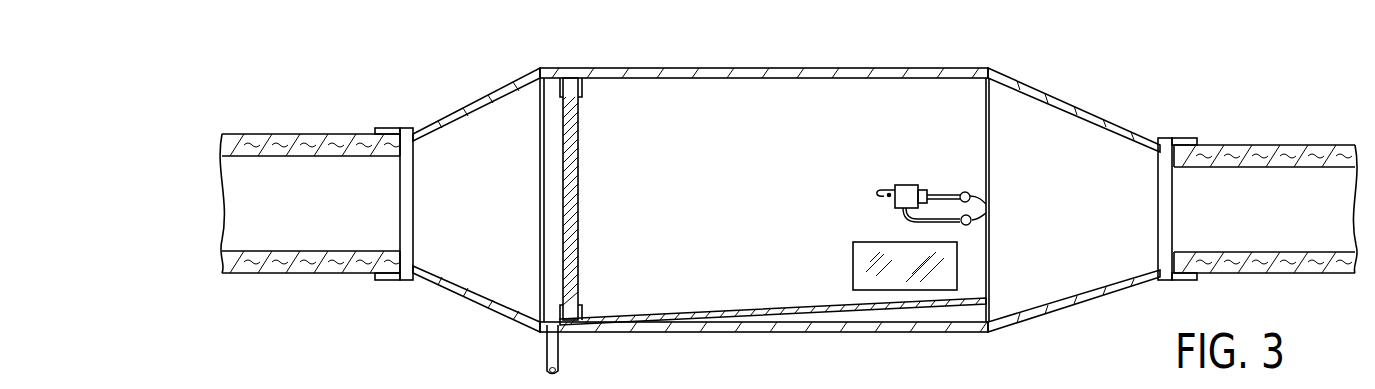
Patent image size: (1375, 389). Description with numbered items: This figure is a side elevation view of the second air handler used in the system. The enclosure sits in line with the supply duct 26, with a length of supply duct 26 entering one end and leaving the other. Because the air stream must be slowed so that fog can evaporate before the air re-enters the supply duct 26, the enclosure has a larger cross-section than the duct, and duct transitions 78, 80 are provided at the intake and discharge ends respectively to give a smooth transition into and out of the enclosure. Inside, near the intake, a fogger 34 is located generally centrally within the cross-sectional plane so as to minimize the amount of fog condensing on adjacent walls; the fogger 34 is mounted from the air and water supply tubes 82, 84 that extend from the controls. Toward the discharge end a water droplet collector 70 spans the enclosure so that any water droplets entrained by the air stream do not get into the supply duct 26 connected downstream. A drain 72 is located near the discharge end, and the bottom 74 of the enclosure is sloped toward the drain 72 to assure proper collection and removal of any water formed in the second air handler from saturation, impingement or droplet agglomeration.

The supply duct 26 is at (325, 133).
The duct transition 80 is at (458, 104).
The duct transition 78 is at (1068, 99).
The water droplet collector 70 is at (584, 188).
The drain 72 is at (559, 350).
The bottom 74 is at (733, 312).
The fogger 34 is at (906, 184).
The water supply tube 84 is at (972, 197).
The air supply tube 82 is at (973, 220).